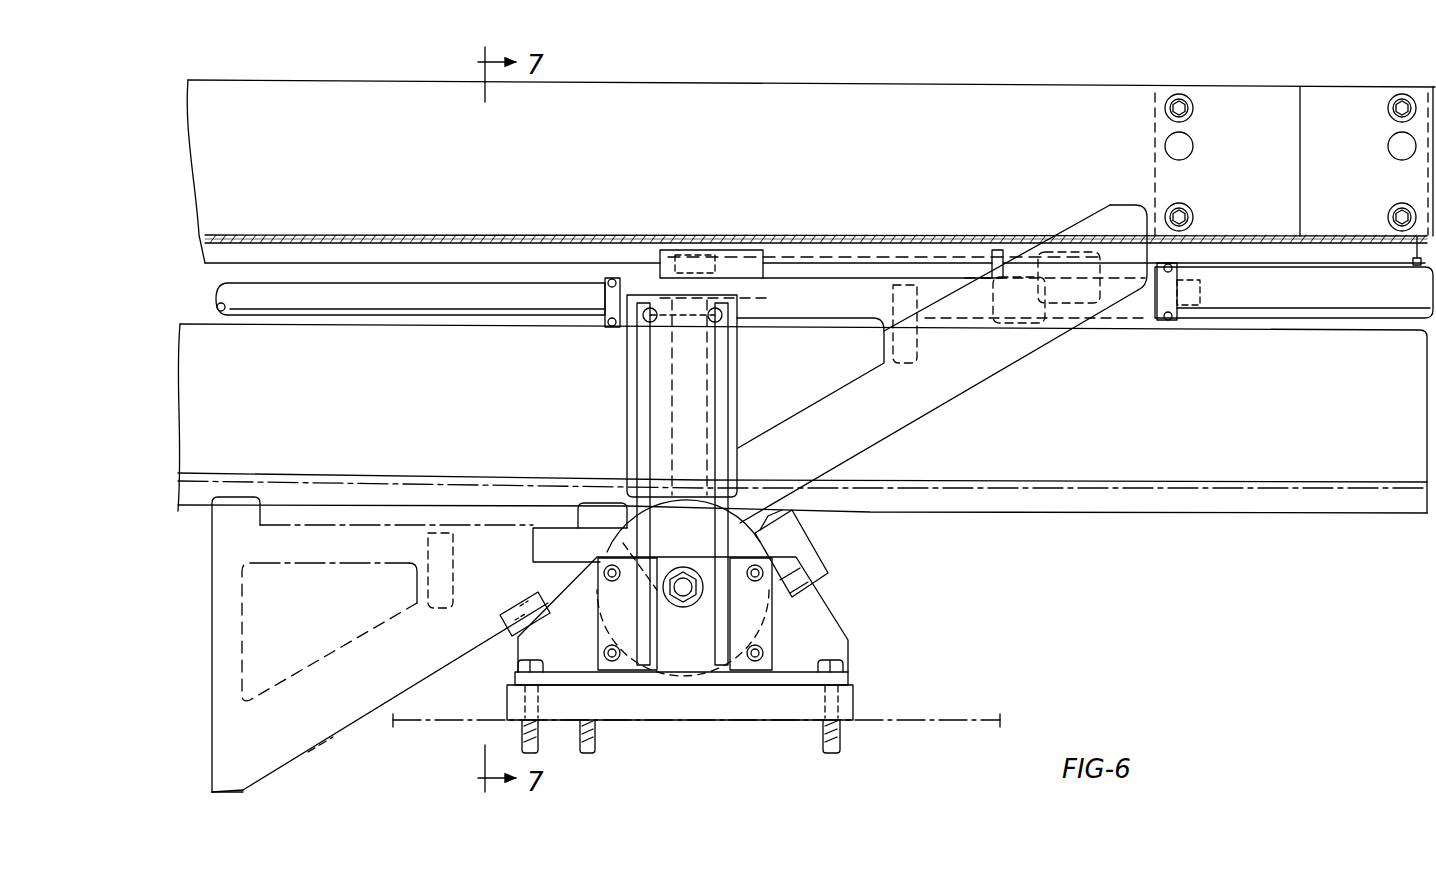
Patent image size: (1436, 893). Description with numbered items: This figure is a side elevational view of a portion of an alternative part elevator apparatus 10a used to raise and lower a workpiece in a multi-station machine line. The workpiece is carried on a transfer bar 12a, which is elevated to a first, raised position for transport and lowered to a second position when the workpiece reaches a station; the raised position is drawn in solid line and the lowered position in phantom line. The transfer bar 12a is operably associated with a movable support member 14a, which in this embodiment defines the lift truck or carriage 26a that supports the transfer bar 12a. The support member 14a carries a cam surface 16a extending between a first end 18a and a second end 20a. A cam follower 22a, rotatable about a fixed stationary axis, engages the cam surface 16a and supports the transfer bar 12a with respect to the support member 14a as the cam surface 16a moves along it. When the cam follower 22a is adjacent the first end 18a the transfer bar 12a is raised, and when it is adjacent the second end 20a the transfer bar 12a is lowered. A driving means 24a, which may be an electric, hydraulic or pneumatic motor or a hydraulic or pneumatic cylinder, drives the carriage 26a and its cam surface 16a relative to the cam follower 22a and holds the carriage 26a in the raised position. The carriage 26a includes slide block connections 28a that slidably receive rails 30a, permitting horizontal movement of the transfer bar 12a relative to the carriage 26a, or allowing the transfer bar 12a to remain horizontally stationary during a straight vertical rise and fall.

The alternative part elevator apparatus 10a is at (410, 70).
The transfer bar 12a is at (602, 102).
The support member 14a is at (962, 372).
The cam surface 16a is at (920, 418).
The first end 18a is at (243, 790).
The second end 20a is at (1130, 325).
The cam follower 22a is at (692, 616).
The driving means 24a is at (1308, 322).
The lift truck or carriage 26a is at (830, 292).
The slide block connection 28a is at (728, 268).
The rail 30a is at (399, 247).